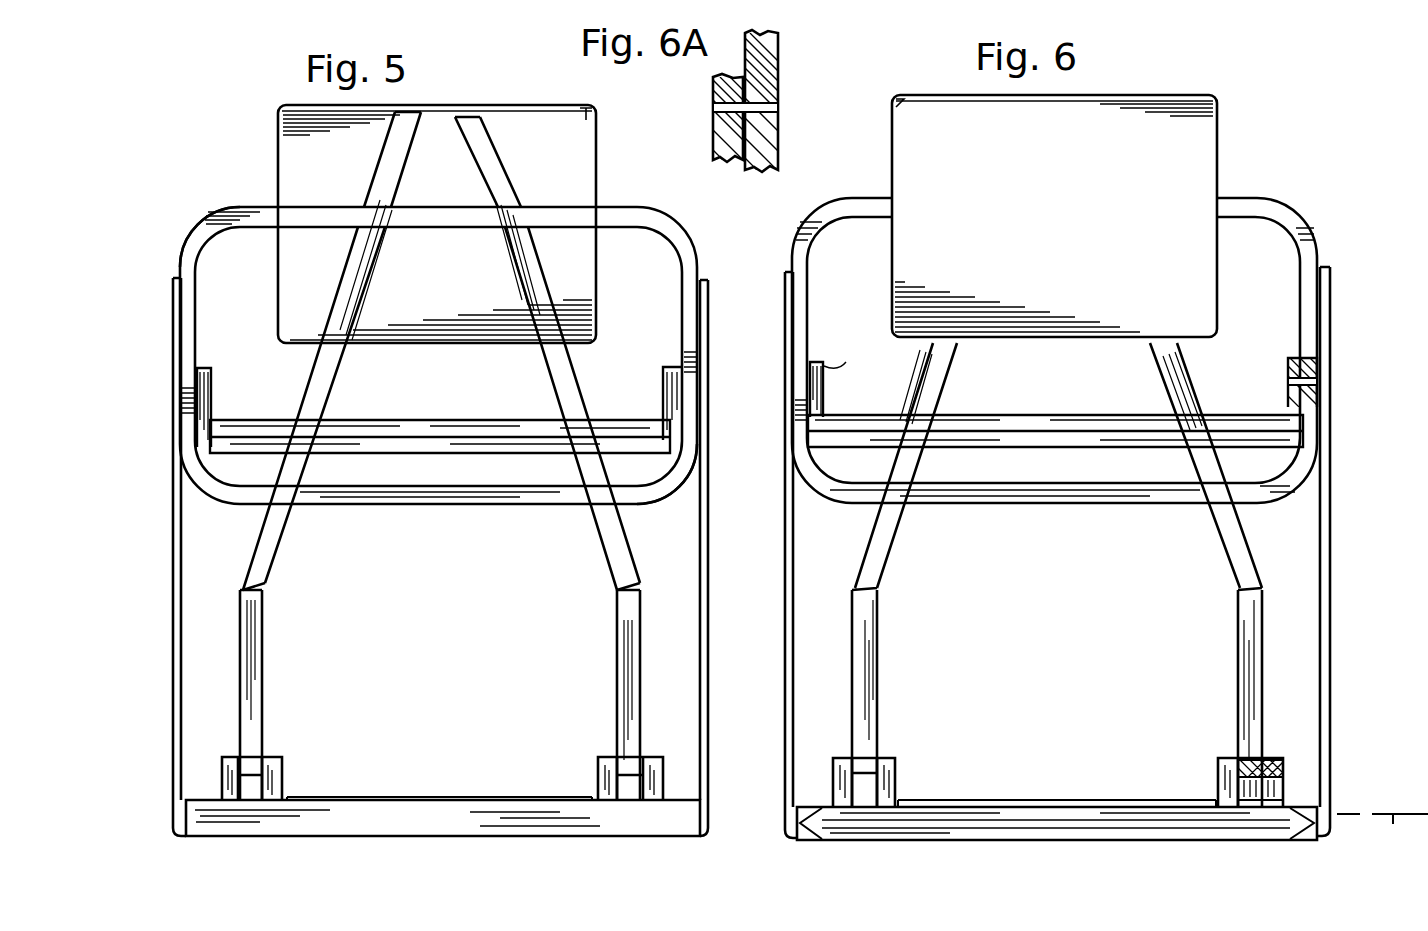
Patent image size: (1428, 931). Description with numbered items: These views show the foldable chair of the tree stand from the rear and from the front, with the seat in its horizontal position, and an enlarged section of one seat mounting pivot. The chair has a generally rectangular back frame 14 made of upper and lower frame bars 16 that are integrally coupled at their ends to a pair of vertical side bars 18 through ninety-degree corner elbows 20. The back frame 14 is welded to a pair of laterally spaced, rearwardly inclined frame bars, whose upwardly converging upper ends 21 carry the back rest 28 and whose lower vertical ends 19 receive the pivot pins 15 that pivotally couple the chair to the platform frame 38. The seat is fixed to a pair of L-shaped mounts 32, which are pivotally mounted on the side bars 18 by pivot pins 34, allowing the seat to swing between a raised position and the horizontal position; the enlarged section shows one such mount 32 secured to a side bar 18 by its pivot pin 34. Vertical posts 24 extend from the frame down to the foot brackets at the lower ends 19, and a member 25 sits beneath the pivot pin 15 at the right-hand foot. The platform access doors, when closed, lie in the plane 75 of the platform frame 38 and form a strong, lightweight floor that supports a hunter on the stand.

In FIG. 5, the back frame 14 is at (203, 203).
In FIG. 6, the pivot pin 15 is at (1283, 762).
In FIG. 5, the upper and lower frame bars 16 is at (603, 222).
In FIG. 5, the vertical side bars 18 is at (193, 307).
In FIG. 6A, the vertical side bars 18 is at (780, 148).
In FIG. 6, the vertical side bars 18 is at (1318, 422).
In FIG. 6, the lower vertical ends 19 is at (878, 742).
In FIG. 5, the corner elbows 20 is at (213, 240).
In FIG. 5, the upper ends 21 is at (400, 176).
In FIG. 5, the support post 24 is at (262, 690).
In FIG. 6, the support post 24 is at (878, 652).
In FIG. 6, the washer / plug 25 is at (1277, 798).
In FIG. 5, the back rest 28 is at (459, 287).
In FIG. 6, the back rest 28 is at (1068, 230).
In FIG. 5, the L-shaped mounts 32 is at (210, 382).
In FIG. 6A, the L-shaped mounts 32 is at (717, 139).
In FIG. 6, the L-shaped mounts 32 is at (1290, 372).
In FIG. 6A, the pivot pins 34 is at (760, 105).
In FIG. 6, the pivot pins 34 is at (1320, 358).
In FIG. 6, the platform frame 38 is at (1300, 848).
In FIG. 6, the plane of the platform 75 is at (1382, 831).